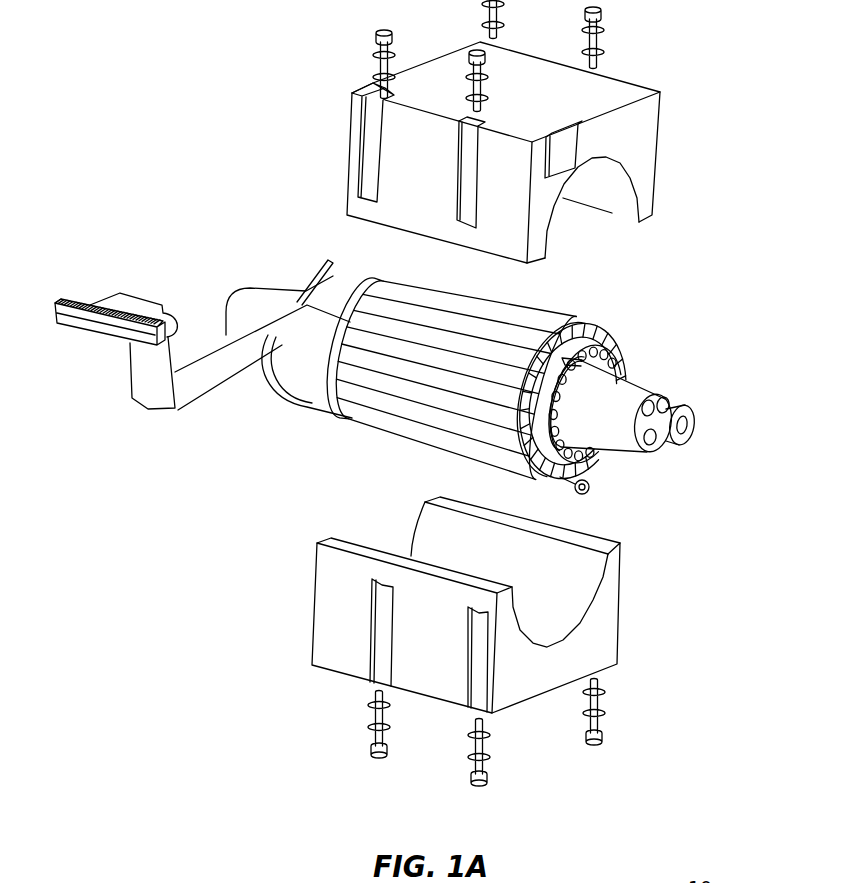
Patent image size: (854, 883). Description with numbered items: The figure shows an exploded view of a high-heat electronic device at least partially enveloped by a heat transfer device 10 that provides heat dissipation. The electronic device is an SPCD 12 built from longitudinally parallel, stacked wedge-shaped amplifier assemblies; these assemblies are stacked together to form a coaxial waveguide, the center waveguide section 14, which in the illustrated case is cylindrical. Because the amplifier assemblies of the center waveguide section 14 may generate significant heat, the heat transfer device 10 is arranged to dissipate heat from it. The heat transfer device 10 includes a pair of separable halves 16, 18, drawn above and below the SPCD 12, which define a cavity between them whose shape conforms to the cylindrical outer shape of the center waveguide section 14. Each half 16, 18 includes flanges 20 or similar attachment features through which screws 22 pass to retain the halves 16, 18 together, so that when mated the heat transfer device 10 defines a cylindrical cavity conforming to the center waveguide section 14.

The heat transfer device 10 is at (667, 67).
The SPCD 12 is at (667, 373).
The center waveguide section 14 is at (543, 308).
The separable half 16 is at (657, 160).
The separable half 18 is at (622, 603).
The flange 20 is at (373, 198).
The screw 22 is at (380, 28).